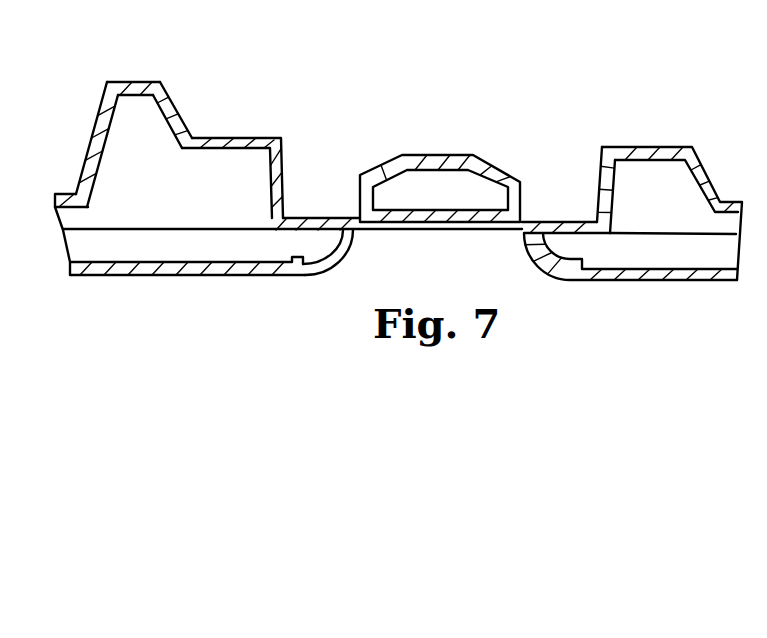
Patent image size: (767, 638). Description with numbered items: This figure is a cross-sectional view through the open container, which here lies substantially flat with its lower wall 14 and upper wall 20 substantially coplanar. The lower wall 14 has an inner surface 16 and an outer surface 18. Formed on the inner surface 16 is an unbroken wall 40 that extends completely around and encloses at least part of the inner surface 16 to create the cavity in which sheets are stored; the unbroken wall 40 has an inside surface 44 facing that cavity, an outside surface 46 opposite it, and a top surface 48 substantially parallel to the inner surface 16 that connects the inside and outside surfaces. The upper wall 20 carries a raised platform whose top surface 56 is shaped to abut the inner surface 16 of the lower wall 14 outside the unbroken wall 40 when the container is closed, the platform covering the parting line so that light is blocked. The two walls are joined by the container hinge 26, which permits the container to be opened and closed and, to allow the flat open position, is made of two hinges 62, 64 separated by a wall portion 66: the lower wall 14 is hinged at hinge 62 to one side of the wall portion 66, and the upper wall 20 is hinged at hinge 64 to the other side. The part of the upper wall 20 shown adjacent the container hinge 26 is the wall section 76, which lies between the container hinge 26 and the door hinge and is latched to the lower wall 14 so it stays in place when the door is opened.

The lower wall 14 is at (233, 137).
The inner surface 16 is at (65, 193).
The outer surface 18 is at (259, 277).
The upper wall 20 is at (665, 143).
The container hinge 26 is at (449, 153).
The unbroken wall 40 is at (138, 81).
The inside surface 44 is at (93, 127).
The outside surface 46 is at (172, 100).
The top surface 48 is at (112, 80).
The top surface 56 is at (617, 146).
The hinge 62 is at (351, 218).
The hinge 64 is at (531, 221).
The wall portion 66 is at (398, 158).
The wall section 76 is at (637, 286).